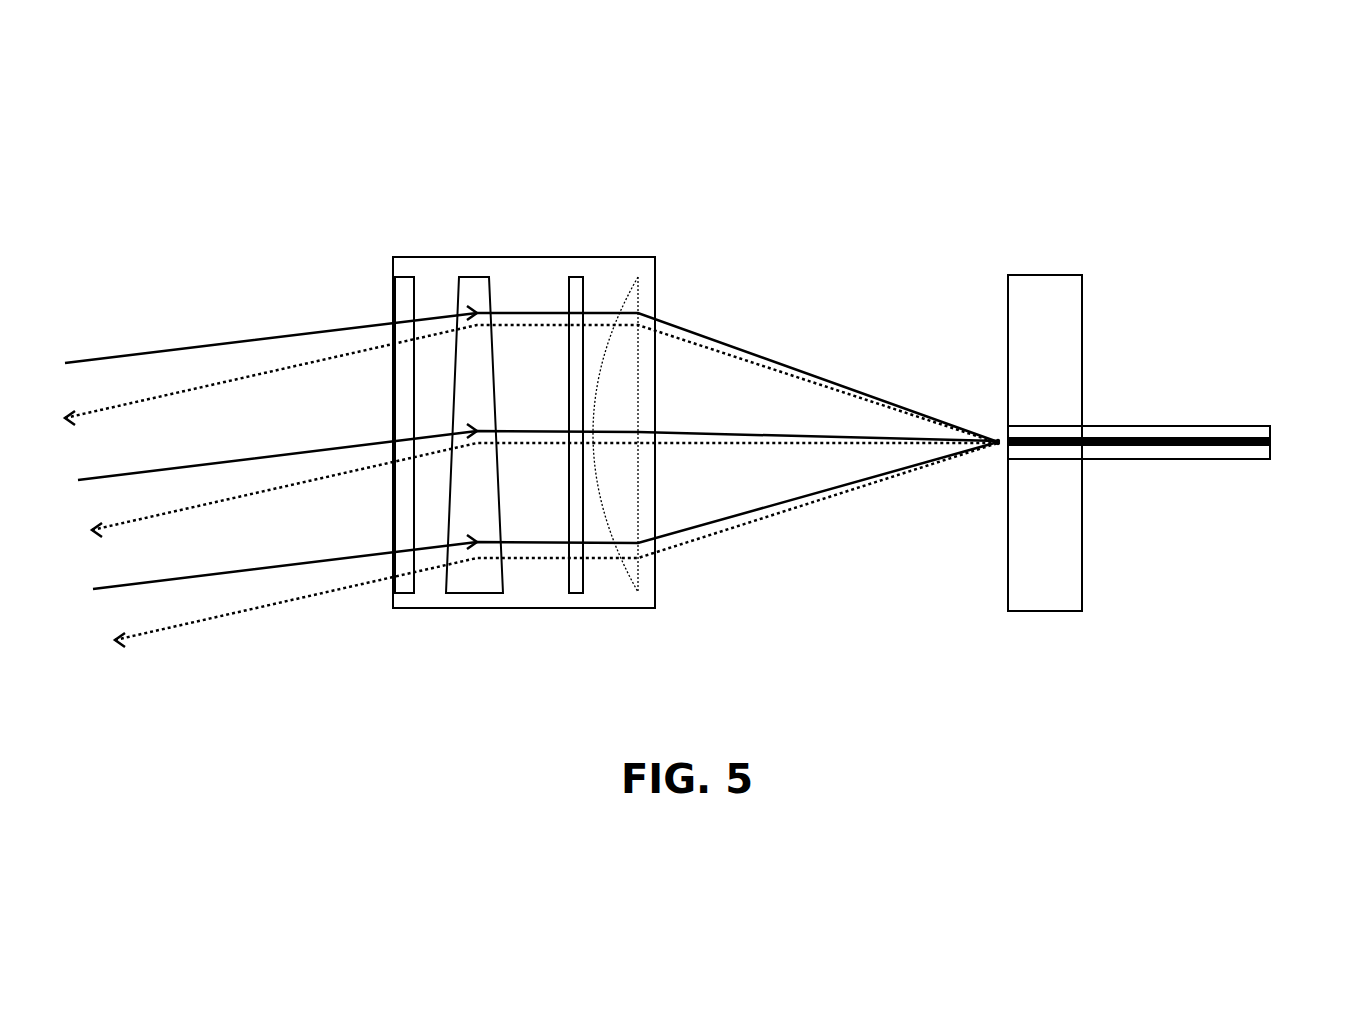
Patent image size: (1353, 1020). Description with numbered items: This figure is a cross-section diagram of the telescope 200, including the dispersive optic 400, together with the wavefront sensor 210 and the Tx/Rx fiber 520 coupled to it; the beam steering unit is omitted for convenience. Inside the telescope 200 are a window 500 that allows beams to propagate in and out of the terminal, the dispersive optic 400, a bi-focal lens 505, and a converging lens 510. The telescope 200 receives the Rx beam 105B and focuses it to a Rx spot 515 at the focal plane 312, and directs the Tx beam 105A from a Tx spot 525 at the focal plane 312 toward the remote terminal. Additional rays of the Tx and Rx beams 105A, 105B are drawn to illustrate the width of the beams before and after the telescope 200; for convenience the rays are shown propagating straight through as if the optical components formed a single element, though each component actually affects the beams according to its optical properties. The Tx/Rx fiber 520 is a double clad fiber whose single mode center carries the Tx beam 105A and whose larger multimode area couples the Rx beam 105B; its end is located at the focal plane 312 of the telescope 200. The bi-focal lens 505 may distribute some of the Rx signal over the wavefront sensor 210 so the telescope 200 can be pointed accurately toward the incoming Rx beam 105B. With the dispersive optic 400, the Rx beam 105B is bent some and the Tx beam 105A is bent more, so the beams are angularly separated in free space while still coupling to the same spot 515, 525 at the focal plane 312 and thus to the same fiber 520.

The telescope 200 is at (506, 363).
The window 500 is at (400, 277).
The dispersive optic 400 is at (460, 277).
The bi-focal lens 505 is at (572, 278).
The converging lens 510 is at (637, 277).
The Rx beam 105B is at (531, 434).
The Tx beam 105A is at (531, 503).
The wavefront sensor 210 is at (1028, 601).
The focal plane 312 is at (1004, 303).
The Tx/Rx fiber 520 is at (1230, 425).
The Rx spot 515 is at (984, 421).
The Tx spot 525 is at (980, 463).